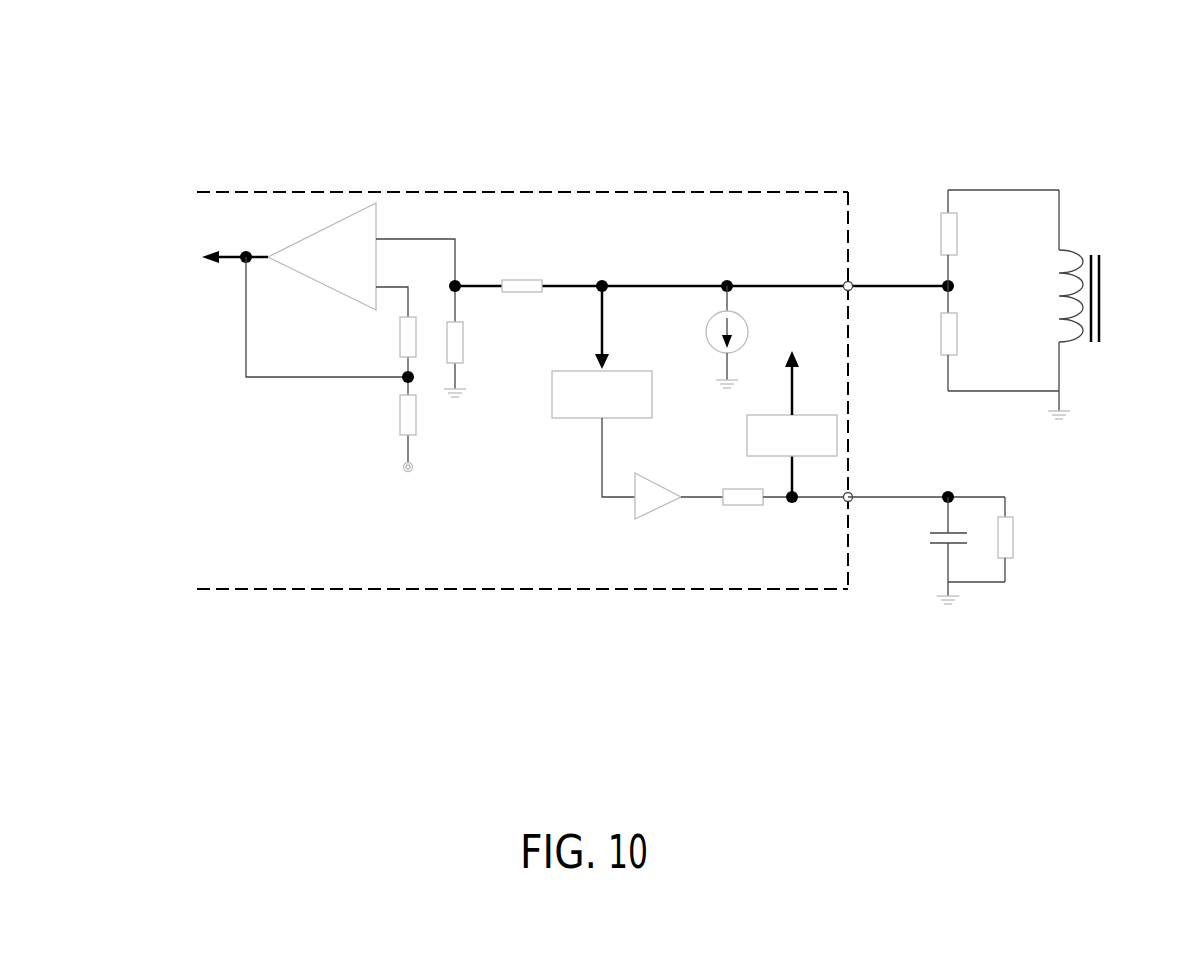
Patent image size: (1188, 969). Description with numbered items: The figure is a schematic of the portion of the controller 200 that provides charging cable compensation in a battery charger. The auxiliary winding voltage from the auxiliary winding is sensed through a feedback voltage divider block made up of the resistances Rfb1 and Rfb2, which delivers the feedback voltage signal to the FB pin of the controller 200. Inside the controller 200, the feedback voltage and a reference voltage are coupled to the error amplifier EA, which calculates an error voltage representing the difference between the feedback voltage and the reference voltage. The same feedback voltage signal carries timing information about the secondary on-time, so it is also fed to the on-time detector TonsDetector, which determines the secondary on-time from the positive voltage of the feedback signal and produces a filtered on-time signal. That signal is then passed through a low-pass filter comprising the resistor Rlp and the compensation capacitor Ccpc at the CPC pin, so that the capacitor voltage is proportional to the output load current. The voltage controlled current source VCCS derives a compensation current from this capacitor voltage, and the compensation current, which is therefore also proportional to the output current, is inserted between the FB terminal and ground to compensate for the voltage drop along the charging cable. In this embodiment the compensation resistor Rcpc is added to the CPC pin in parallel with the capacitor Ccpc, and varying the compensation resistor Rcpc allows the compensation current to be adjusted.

The controller 200 is at (651, 100).
The error amplifier EA is at (322, 256).
The Tons detector TonsDetector is at (602, 352).
The low-pass filter resistor Rlp is at (743, 509).
The voltage controlled current source VCCS is at (792, 410).
The feedback voltage divider resistance Rfb1 is at (971, 238).
The feedback voltage divider resistance Rfb2 is at (971, 338).
The compensation capacitor Ccpc is at (926, 539).
The compensation resistor Rcpc is at (1034, 539).